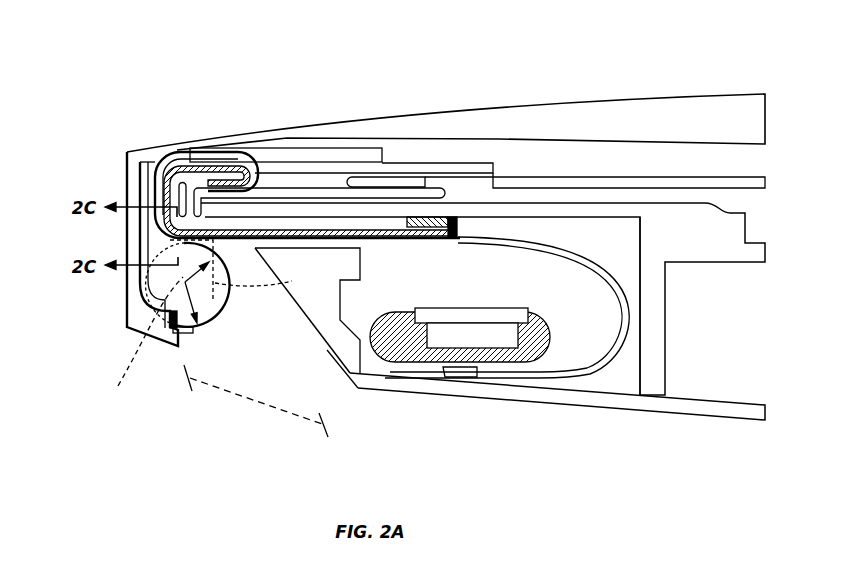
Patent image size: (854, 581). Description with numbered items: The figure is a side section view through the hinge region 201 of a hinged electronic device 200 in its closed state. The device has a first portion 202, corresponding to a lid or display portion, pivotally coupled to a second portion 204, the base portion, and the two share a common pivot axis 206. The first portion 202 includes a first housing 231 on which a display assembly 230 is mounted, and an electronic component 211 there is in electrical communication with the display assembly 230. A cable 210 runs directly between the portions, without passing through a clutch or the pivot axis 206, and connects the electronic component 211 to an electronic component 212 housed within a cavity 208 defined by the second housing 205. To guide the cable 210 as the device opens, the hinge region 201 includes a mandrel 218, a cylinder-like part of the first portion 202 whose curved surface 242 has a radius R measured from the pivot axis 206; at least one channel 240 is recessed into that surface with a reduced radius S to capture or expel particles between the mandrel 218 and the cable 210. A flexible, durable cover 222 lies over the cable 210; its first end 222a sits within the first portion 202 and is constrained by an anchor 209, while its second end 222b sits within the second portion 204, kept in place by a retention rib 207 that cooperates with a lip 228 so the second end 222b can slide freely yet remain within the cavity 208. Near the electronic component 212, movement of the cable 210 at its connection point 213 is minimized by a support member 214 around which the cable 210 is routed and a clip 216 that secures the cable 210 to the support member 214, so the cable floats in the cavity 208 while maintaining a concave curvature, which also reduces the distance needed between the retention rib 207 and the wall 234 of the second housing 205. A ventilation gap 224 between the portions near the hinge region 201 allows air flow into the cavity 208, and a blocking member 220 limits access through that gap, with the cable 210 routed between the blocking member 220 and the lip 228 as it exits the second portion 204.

The electronic device 200 is at (83, 95).
The hinge region 201 is at (112, 296).
The first portion 202 is at (465, 92).
The second portion 204 is at (648, 432).
The second housing 205 is at (707, 403).
The pivot axis 206 is at (133, 324).
The retention rib 207 is at (455, 222).
The cavity 208 is at (506, 307).
The anchor 209 is at (200, 140).
The cable 210 is at (626, 320).
The electronic component 211 is at (325, 148).
The electronic component 212 is at (468, 308).
The connection point 213 is at (412, 316).
The support member 214 is at (548, 336).
The clip 216 is at (477, 377).
The mandrel 218 is at (230, 292).
The blocking member 220 is at (348, 382).
The cover 222 is at (380, 237).
The first end 222a is at (240, 175).
The second end 222b is at (458, 234).
The ventilation gap 224 is at (255, 420).
The lip 228 is at (347, 180).
The display assembly 230 is at (757, 172).
The first housing 231 is at (388, 193).
The wall 234 is at (640, 240).
The channel 240 is at (249, 270).
The curved surface 242 is at (215, 330).
The radius R is at (177, 332).
The reduced radius S is at (205, 320).